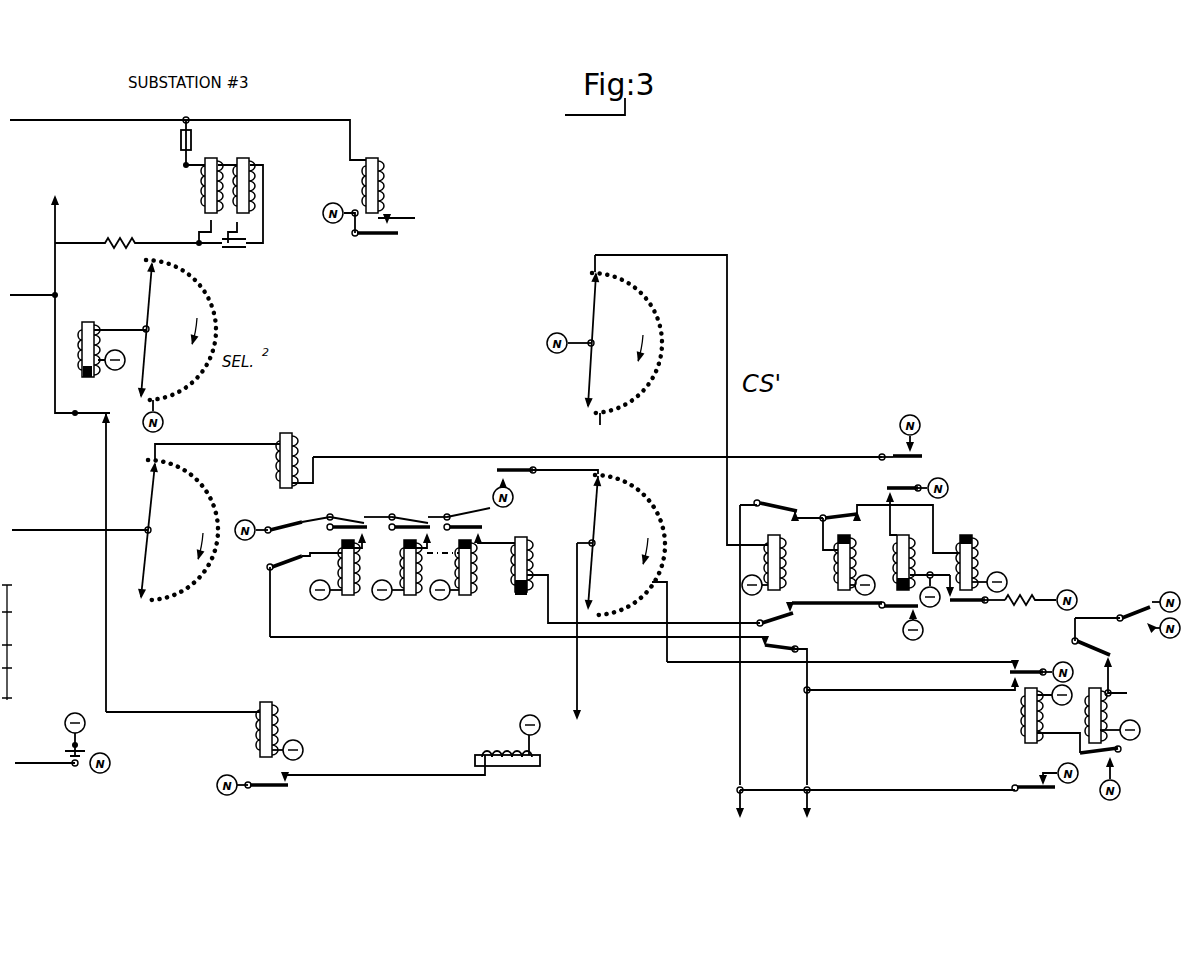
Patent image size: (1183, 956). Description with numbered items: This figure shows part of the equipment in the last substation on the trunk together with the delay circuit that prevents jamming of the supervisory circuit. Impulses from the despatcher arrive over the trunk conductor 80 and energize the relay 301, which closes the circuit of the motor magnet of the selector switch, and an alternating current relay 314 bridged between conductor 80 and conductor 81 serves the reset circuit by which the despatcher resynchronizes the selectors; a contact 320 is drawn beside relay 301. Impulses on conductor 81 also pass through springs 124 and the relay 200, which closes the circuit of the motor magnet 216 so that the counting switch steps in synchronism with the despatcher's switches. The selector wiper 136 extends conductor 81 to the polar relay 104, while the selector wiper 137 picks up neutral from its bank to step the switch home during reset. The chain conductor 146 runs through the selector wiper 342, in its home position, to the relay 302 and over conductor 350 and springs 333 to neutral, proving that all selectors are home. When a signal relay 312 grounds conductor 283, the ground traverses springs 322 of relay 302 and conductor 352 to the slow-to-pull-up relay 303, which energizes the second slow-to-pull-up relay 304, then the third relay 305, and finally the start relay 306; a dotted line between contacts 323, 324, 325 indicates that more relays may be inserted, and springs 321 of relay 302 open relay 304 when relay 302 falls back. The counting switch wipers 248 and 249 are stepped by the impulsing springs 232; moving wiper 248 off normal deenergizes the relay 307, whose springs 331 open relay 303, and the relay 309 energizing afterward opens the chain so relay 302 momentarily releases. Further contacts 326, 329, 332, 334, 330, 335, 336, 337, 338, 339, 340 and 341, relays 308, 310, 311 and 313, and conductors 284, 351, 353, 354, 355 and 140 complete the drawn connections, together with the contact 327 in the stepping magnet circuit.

The trunk conductor 80 is at (70, 122).
The selector wiper 136 is at (78, 208).
The alternating current relay 314 is at (220, 163).
The relay 301 is at (398, 148).
The contact 320 is at (372, 236).
The conductor 81 is at (36, 304).
The springs 124 is at (88, 422).
The polar relay 104 is at (80, 374).
The selector wiper 137 is at (146, 306).
The conductor 146 is at (66, 534).
The selector wiper 342 is at (158, 514).
The relay 302 is at (290, 442).
The conductor 350 is at (435, 458).
The springs 321 is at (292, 512).
The contact 323 is at (364, 520).
The contact 324 is at (437, 520).
The contact 325 is at (479, 524).
The contact 326 is at (520, 473).
The springs 322 is at (280, 572).
The slow-to-pull-up relay 303 is at (350, 598).
The second slow-to-pull-up relay 304 is at (410, 596).
The third relay 305 is at (453, 582).
The start relay 306 is at (523, 530).
The conductor 352 is at (428, 640).
The impulsing springs 232 is at (594, 651).
The counting switch wiper 249 is at (593, 537).
The conductor 351 is at (727, 300).
The counting switch wiper 248 is at (586, 320).
The contact 329 is at (780, 497).
The conductor 284 is at (740, 736).
The relay 307 is at (780, 532).
The contact 332 is at (846, 508).
The relay 308 is at (844, 584).
The relay 309 is at (922, 553).
The contact 334 is at (888, 486).
The springs 333 is at (920, 458).
The relay 310 is at (975, 538).
The contact 336 is at (964, 606).
The resistance 311 is at (1041, 591).
The contact 330 is at (791, 622).
The contact 335 is at (890, 610).
The springs 331 is at (776, 664).
The conductor 283 is at (810, 736).
The conductor 353 is at (885, 655).
The conductor 354 is at (903, 684).
The contact 338 is at (1040, 660).
The signal relay 312 is at (1024, 735).
The contact 340 is at (1116, 750).
The conductor 355 is at (898, 782).
The contact 341 is at (1036, 795).
The contact 337 is at (1138, 596).
The contact 339 is at (1095, 644).
The relay 313 is at (1104, 688).
The conductor 140 is at (108, 674).
The relay 200 is at (273, 714).
The contact 327 is at (280, 791).
The motor magnet 216 is at (476, 754).